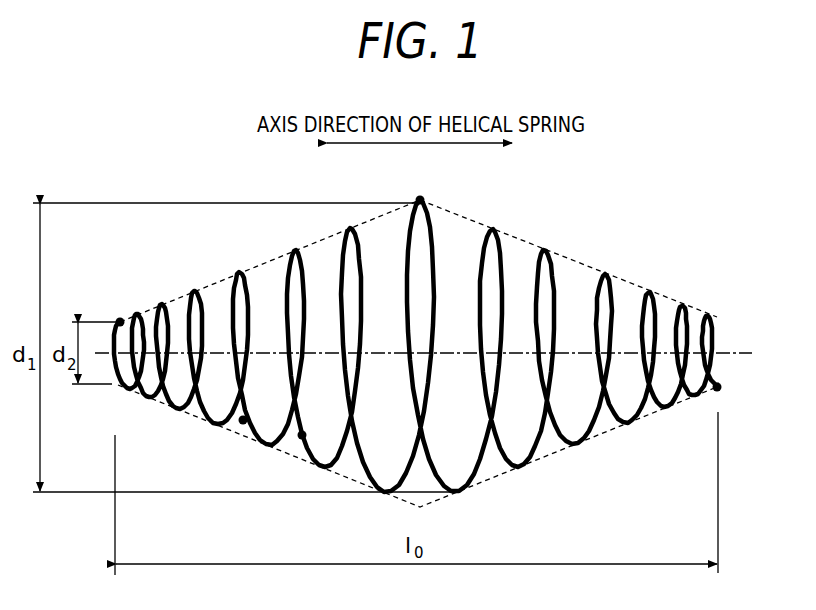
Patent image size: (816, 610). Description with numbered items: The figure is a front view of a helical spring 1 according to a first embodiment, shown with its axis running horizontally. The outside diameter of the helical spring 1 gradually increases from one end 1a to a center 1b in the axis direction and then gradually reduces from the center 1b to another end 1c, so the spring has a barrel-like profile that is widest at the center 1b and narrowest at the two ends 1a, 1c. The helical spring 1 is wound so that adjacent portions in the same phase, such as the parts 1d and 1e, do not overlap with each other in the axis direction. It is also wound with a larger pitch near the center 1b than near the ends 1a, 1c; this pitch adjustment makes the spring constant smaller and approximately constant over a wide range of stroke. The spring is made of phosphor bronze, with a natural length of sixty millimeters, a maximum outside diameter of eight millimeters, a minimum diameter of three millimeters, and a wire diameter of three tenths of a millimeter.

The helical spring 1 is at (556, 266).
The one end 1a is at (718, 390).
The center 1b is at (424, 199).
The another end 1c is at (120, 320).
The part 1d is at (242, 422).
The part 1e is at (301, 437).